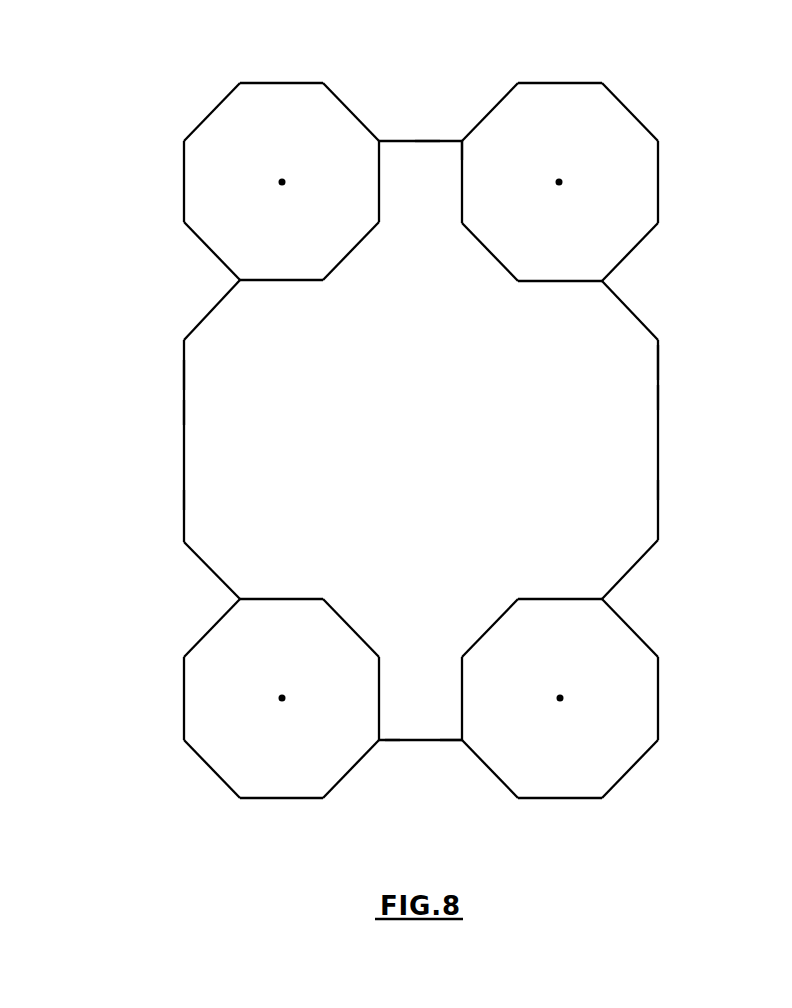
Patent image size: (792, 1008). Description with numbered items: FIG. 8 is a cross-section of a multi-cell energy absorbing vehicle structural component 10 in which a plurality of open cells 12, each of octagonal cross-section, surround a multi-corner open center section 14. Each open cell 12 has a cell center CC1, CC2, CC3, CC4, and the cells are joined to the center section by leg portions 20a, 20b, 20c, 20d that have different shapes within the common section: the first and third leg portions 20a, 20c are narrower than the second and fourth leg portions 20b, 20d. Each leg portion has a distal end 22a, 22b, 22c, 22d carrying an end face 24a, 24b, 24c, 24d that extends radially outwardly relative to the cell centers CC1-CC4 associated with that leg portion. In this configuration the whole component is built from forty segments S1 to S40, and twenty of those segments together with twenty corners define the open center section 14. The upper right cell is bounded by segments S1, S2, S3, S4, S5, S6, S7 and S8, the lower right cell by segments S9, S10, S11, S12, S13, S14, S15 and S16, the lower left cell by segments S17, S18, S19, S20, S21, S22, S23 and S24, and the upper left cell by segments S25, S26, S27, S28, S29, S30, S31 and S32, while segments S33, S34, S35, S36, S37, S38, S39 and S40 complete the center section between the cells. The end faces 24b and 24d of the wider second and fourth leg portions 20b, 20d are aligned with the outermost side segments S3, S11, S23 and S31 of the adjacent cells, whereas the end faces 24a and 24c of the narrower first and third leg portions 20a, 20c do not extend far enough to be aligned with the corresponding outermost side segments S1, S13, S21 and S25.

The vehicle structural component 10 is at (688, 113).
The open cell 12 is at (305, 116).
The open center section 14 is at (430, 445).
The first leg portion 20a is at (420, 127).
The second leg portion 20b is at (625, 365).
The third leg portion 20c is at (419, 749).
The fourth leg portion 20d is at (208, 382).
The distal end of first leg portion 22a is at (457, 142).
The distal end of second leg portion 22b is at (658, 490).
The distal end of third leg portion 22c is at (443, 737).
The distal end of fourth leg portion 22d is at (185, 500).
The end face of first leg portion 24a is at (428, 140).
The end face of second leg portion 24b is at (659, 395).
The end face of third leg portion 24c is at (392, 742).
The end face of fourth leg portion 24d is at (183, 412).
The cell center CC1 is at (285, 183).
The cell center CC2 is at (562, 183).
The cell center CC3 is at (563, 699).
The cell center CC4 is at (285, 699).
The segment S1 is at (560, 68).
The segment S2 is at (631, 112).
The segment S3 is at (646, 182).
The segment S4 is at (638, 252).
The segment S5 is at (560, 262).
The segment S6 is at (490, 252).
The segment S7 is at (480, 182).
The segment S8 is at (490, 109).
The segment S9 is at (560, 618).
The segment S10 is at (636, 628).
The segment S11 is at (677, 698).
The segment S12 is at (636, 769).
The segment S13 is at (560, 815).
The segment S14 is at (494, 769).
The segment S15 is at (481, 698).
The segment S16 is at (486, 628).
The segment S17 is at (281, 620).
The segment S18 is at (353, 628).
The segment S19 is at (361, 698).
The segment S20 is at (357, 770).
The segment S21 is at (281, 817).
The segment S22 is at (209, 769).
The segment S23 is at (165, 698).
The segment S24 is at (207, 628).
The segment S25 is at (281, 65).
The segment S26 is at (354, 112).
The segment S27 is at (360, 181).
The segment S28 is at (358, 251).
The segment S29 is at (281, 262).
The segment S30 is at (213, 251).
The segment S31 is at (203, 181).
The segment S32 is at (217, 113).
The segment S33 is at (631, 310).
The segment S34 is at (676, 440).
The segment S35 is at (636, 570).
The segment S36 is at (407, 720).
The segment S37 is at (206, 570).
The segment S38 is at (164, 441).
The segment S39 is at (204, 310).
The segment S40 is at (420, 160).